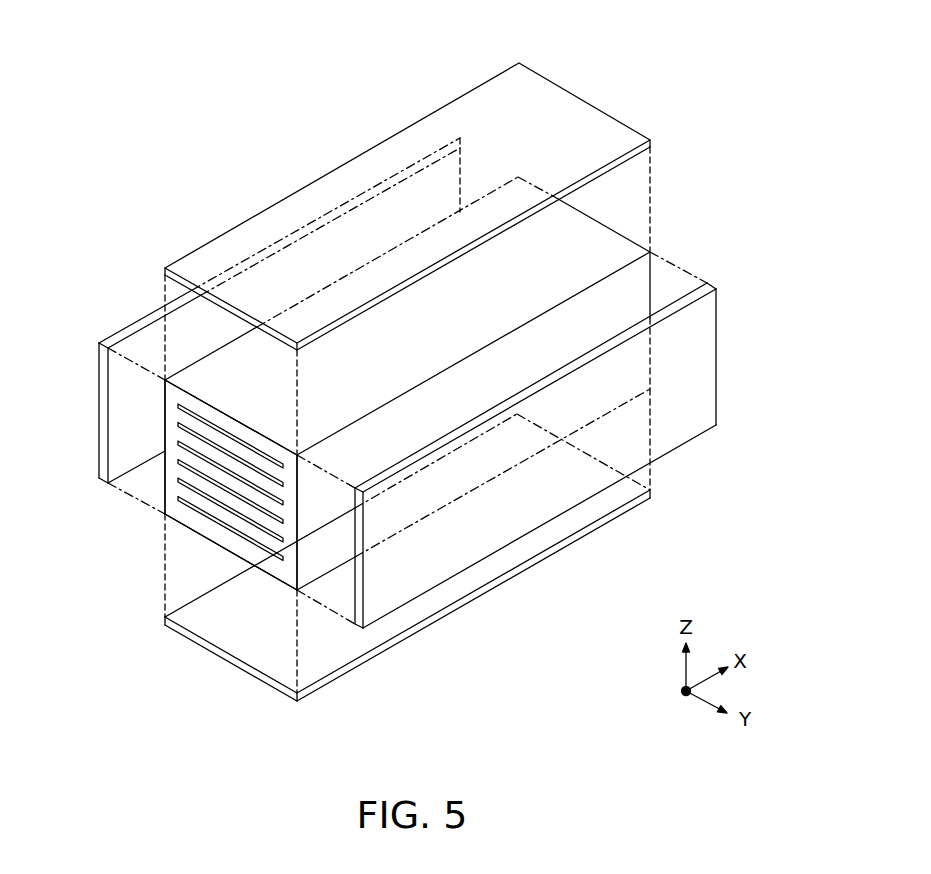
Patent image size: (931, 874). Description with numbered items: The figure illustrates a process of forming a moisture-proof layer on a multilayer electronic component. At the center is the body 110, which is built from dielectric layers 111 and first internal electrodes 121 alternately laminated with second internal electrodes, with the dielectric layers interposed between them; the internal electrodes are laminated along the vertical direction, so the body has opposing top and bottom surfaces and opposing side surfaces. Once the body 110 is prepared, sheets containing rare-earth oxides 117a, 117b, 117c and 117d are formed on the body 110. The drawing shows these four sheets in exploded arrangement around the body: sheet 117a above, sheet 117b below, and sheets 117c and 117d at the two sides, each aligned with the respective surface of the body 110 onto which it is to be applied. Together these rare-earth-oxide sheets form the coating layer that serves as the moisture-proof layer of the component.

The body 110 is at (592, 242).
The dielectric layer 111 is at (195, 423).
The first internal electrode 121 is at (193, 403).
The sheet containing rare-earth oxide 117a is at (566, 110).
The sheet containing rare-earth oxide 117b is at (332, 678).
The sheet containing rare-earth oxide 117c is at (140, 323).
The sheet containing rare-earth oxide 117d is at (670, 422).